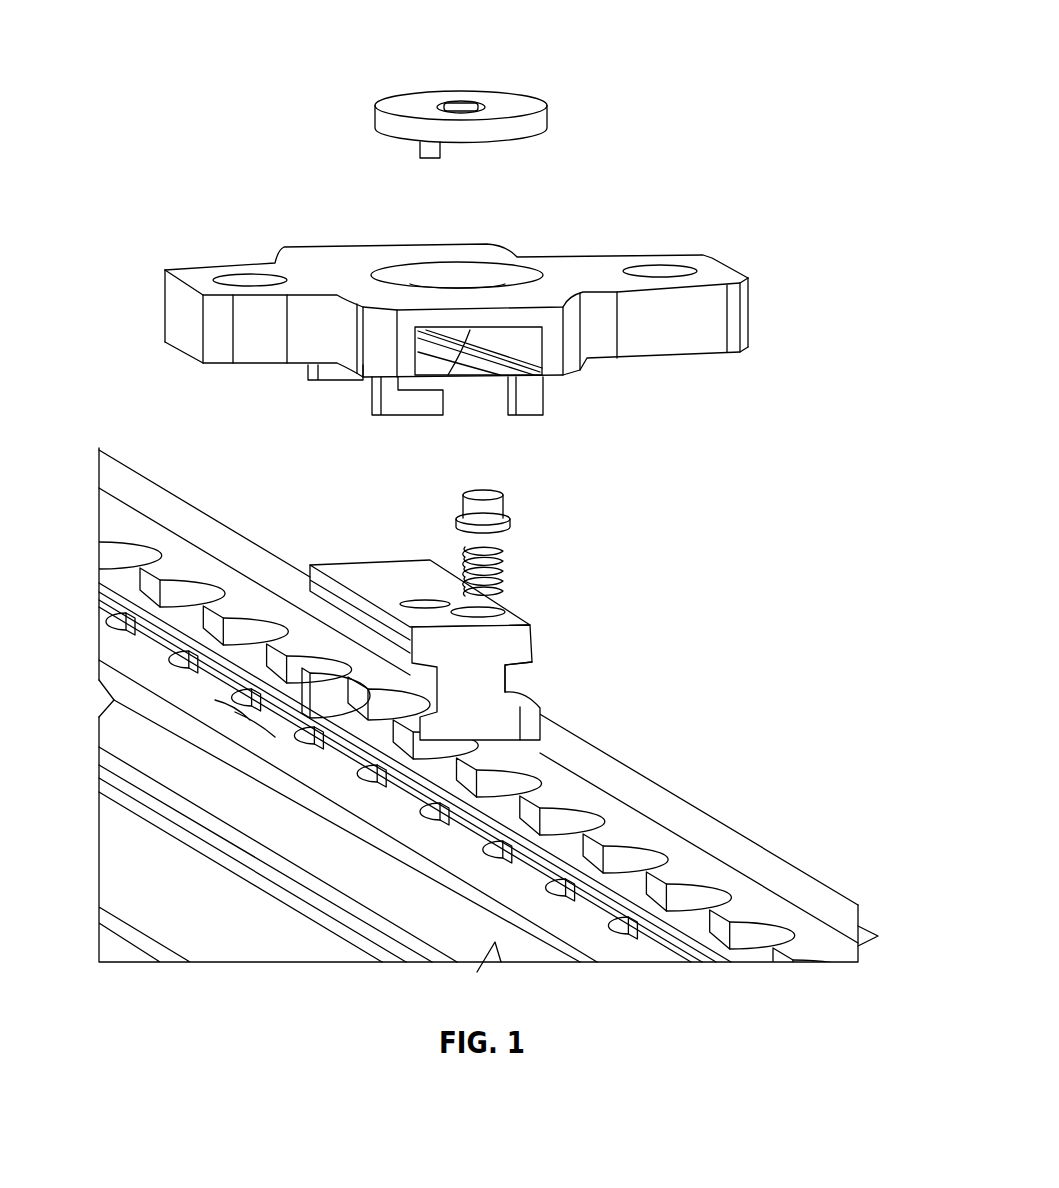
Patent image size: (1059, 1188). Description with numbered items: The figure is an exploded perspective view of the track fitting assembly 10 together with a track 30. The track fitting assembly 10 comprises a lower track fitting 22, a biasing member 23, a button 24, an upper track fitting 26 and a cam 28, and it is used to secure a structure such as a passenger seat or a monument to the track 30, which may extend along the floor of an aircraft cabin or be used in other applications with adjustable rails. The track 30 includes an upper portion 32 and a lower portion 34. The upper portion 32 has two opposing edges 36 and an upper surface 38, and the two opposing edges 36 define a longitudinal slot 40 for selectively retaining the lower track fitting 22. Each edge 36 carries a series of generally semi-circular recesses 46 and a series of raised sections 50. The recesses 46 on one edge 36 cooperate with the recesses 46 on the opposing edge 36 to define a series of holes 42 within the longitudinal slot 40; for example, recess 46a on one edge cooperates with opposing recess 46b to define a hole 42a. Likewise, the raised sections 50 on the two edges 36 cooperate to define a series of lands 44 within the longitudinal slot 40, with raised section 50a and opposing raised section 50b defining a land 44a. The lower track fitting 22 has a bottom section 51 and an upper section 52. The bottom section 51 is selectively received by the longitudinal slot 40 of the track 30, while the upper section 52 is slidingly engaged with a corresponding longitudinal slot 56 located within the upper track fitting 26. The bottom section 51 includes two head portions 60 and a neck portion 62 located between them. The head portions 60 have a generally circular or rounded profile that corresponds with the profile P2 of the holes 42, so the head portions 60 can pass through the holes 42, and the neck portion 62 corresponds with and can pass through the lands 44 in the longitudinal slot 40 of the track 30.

The track fitting assembly 10 is at (657, 46).
The lower track fitting 22 is at (533, 643).
The biasing member 23 is at (503, 572).
The button 24 is at (505, 512).
The upper track fitting 26 is at (500, 248).
The cam 28 is at (547, 121).
The track 30 is at (243, 936).
The upper portion 32 is at (189, 527).
The lower portion 34 is at (375, 888).
The edge 36 is at (121, 613).
The upper surface 38 is at (327, 765).
The longitudinal slot 40 is at (108, 583).
The hole 42 is at (177, 613).
The hole 42a is at (512, 797).
The land 44 is at (190, 657).
The land 44a is at (675, 903).
The recess 46 is at (503, 860).
The recess 46a is at (557, 880).
The recess 46b is at (455, 828).
The raised section 50 is at (615, 850).
The raised section 50a is at (720, 920).
The raised section 50b is at (673, 900).
The bottom section 51 is at (515, 687).
The upper section 52 is at (534, 608).
The longitudinal slot 56 is at (503, 338).
The head portion 60 is at (343, 660).
The neck portion 62 is at (385, 660).
The profile P2 is at (242, 726).